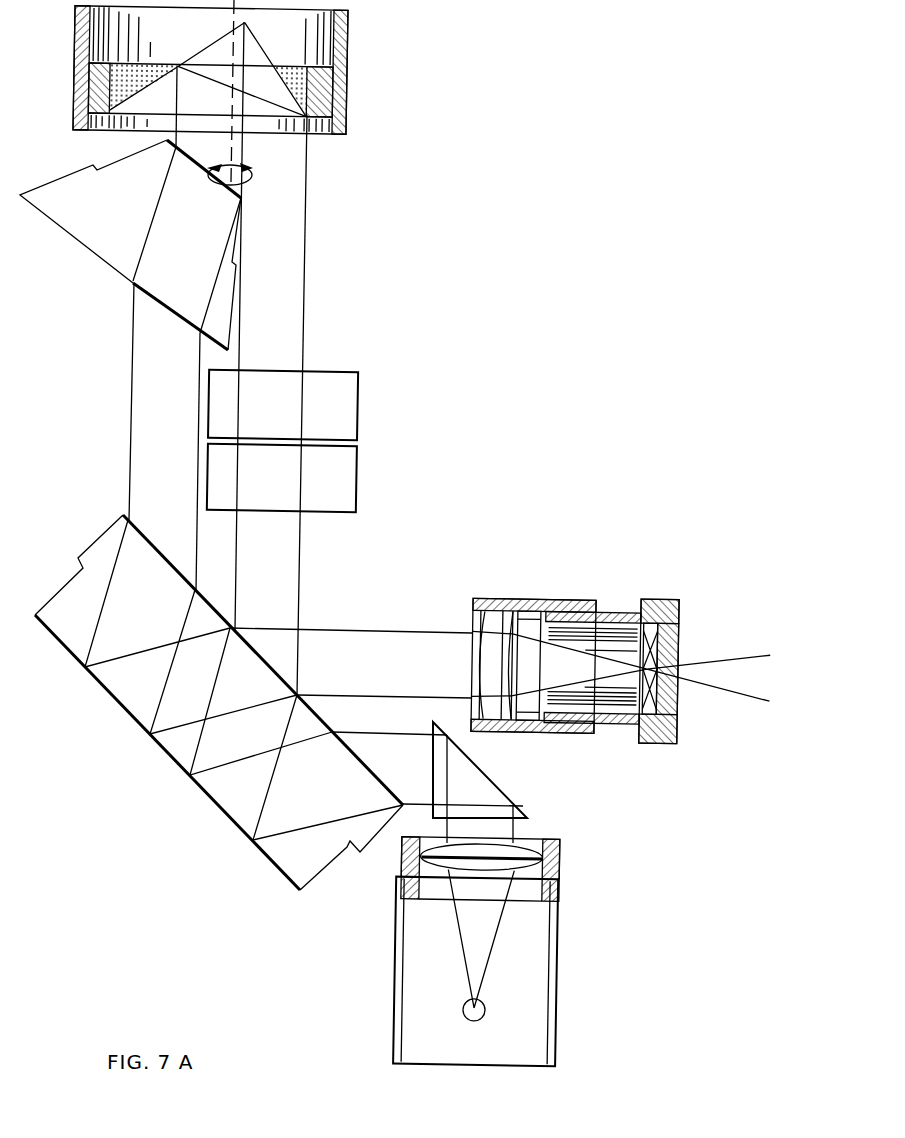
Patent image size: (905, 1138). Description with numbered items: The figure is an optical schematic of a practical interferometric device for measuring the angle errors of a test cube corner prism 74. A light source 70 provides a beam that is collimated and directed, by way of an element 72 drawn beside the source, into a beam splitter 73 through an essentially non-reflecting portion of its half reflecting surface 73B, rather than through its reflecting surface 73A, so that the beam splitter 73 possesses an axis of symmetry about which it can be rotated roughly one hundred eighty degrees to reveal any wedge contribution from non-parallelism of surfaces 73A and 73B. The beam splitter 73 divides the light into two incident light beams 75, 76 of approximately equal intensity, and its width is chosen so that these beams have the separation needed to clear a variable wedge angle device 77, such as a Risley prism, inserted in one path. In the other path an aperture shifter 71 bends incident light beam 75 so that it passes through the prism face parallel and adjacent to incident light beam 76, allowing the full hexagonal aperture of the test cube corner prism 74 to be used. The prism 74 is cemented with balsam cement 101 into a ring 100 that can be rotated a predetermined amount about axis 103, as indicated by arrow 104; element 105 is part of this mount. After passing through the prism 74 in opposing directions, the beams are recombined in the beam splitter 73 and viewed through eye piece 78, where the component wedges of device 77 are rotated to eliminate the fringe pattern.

The light source 70 is at (493, 1040).
The aperture shifter 71 is at (115, 162).
The prism 72 is at (497, 781).
The beam splitter 73 is at (340, 858).
The reflecting surface 73A is at (242, 835).
The half reflecting surface 73B is at (147, 535).
The test cube corner prism 74 is at (348, 93).
The incident light beam 75 is at (129, 470).
The incident light beam 76 is at (303, 588).
The variable wedge angle device 77 is at (358, 458).
The eye piece 78 is at (660, 600).
The ring 100 is at (350, 112).
The balsam cement 101 is at (348, 72).
The axis 103 is at (241, 148).
The arrow 104 is at (253, 175).
The housing cover 105 is at (348, 44).